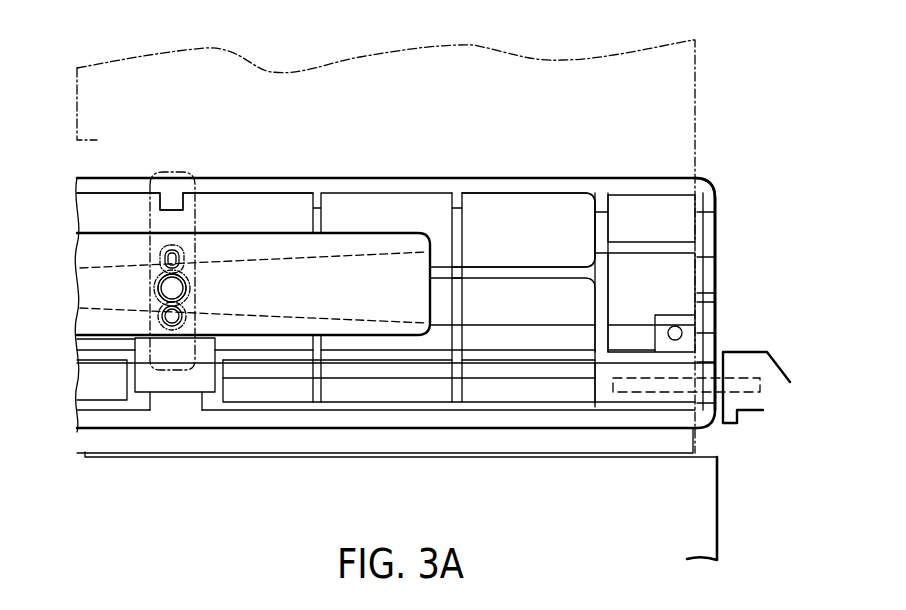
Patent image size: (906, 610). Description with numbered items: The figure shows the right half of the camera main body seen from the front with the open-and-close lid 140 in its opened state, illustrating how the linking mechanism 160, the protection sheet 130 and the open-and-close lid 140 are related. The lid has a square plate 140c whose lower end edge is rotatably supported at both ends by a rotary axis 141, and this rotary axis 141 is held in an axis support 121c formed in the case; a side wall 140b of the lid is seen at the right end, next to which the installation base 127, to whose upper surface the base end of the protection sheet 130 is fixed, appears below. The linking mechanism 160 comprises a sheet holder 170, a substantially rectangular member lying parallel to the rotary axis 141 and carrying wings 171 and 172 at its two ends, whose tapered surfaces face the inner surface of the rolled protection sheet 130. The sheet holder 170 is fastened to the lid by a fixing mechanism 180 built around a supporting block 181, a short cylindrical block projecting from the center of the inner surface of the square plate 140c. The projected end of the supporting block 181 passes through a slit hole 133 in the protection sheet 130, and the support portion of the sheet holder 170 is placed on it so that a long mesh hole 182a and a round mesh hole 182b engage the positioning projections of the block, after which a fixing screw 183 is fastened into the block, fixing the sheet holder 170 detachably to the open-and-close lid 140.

The protection sheet 130 is at (490, 52).
The linking mechanism 160 is at (139, 216).
The sheet holder 170 is at (233, 232).
The open-and-close lid 140 is at (394, 178).
The square plate 140c is at (558, 205).
The housing side wall 140b is at (717, 238).
The axis support 121c is at (740, 350).
The fixing mechanism 180 is at (153, 287).
The supporting block 181 is at (160, 283).
The mesh hole 182a is at (180, 256).
The fixing screw 183 is at (175, 290).
The mesh hole 182b is at (186, 320).
The wing 172 is at (110, 338).
The slit hole 133 is at (171, 398).
The wing 171 is at (358, 335).
The rotary axis 141 is at (650, 396).
The installation base 127 is at (718, 516).